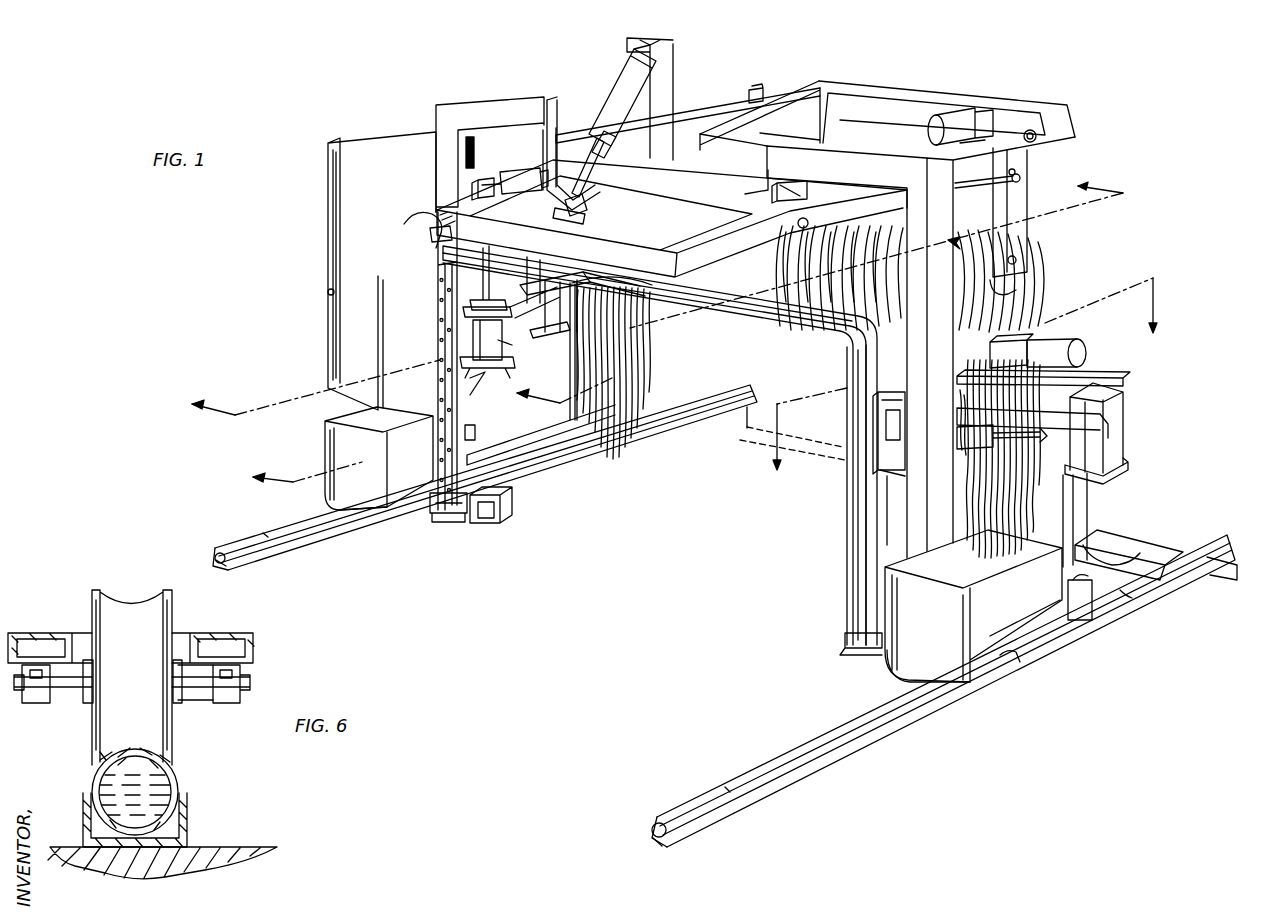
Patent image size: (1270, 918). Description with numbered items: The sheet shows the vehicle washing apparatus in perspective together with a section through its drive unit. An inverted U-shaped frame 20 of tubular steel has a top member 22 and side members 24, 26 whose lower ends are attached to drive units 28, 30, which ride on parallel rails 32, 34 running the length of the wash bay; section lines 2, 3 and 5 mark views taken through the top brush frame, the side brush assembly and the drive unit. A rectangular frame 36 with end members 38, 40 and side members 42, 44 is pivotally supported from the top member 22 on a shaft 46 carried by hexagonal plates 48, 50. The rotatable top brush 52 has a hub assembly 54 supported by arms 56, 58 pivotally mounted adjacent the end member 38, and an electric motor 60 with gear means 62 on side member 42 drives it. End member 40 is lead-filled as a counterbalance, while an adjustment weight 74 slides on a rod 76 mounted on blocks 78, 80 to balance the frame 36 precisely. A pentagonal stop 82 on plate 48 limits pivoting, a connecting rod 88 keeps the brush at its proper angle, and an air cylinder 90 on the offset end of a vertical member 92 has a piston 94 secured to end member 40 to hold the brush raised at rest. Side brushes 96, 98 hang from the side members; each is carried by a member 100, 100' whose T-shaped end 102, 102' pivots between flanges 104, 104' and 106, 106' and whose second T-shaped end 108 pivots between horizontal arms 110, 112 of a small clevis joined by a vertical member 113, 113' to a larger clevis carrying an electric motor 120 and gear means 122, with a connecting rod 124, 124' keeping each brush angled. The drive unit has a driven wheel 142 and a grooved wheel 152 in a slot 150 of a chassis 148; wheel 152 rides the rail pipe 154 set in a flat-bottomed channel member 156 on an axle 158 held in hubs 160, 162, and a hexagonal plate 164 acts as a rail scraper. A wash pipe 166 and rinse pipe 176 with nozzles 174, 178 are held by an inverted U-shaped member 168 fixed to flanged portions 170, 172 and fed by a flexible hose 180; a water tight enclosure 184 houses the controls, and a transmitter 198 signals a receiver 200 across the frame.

In FIG. 1, the section line 2- 2 is at (640, 287).
In FIG. 1, the section line 3- 3 is at (954, 383).
In FIG. 1, the section line 5- 5 is at (432, 423).
In FIG. 1, the inverted U-shaped frame 20 is at (960, 246).
In FIG. 1, the top member 22 is at (493, 107).
In FIG. 1, the side member 24 is at (903, 523).
In FIG. 1, the side member 26 is at (490, 472).
In FIG. 1, the drive unit 28 is at (992, 638).
In FIG. 1, the drive unit 30 is at (338, 408).
In FIG. 1, the rail 32 is at (816, 788).
In FIG. 1, the rail 34 is at (332, 552).
In FIG. 1, the rectangular frame 36 is at (758, 272).
In FIG. 1, the end member 38 is at (1005, 100).
In FIG. 1, the end member 40 is at (438, 213).
In FIG. 1, the side member 42 is at (1078, 128).
In FIG. 1, the side member 44 is at (706, 112).
In FIG. 1, the shaft 46 is at (682, 208).
In FIG. 1, the hexagonal plate 48 is at (745, 194).
In FIG. 1, the hexagonal plate 50 is at (600, 172).
In FIG. 1, the top brush 52 is at (1022, 310).
In FIG. 1, the hub assembly 54 is at (1018, 290).
In FIG. 1, the arm 56 is at (1028, 200).
In FIG. 1, the arm 58 is at (824, 134).
In FIG. 1, the electric motor 60 is at (960, 110).
In FIG. 1, the gear means 62 is at (1035, 130).
In FIG. 1, the adjustment weight 74 is at (542, 178).
In FIG. 1, the rod 76 is at (528, 165).
In FIG. 1, the block 78 is at (478, 190).
In FIG. 1, the block 80 is at (760, 89).
In FIG. 1, the pentagonal stop 82 is at (796, 190).
In FIG. 1, the connecting rod 88 is at (976, 186).
In FIG. 1, the air cylinder 90 is at (615, 86).
In FIG. 1, the member 92 is at (675, 48).
In FIG. 1, the piston 94 is at (586, 208).
In FIG. 1, the side brush 96 is at (1045, 500).
In FIG. 1, the side brush 98 is at (642, 346).
In FIG. 1, the member 100 is at (1060, 440).
In FIG. 1, the member 100' is at (528, 351).
In FIG. 1, the T-shaped end 102 is at (847, 443).
In FIG. 1, the T-shaped end 102' is at (427, 337).
In FIG. 1, the flange 104 is at (849, 433).
In FIG. 1, the flange 104' is at (500, 269).
In FIG. 1, the flange 106 is at (892, 507).
In FIG. 1, the flange 106' is at (437, 387).
In FIG. 1, the second T-shaped end 108 is at (625, 276).
In FIG. 1, the horizontal arm 110 is at (1126, 380).
In FIG. 1, the horizontal arm 112 is at (1110, 468).
In FIG. 1, the vertical member 113 is at (1100, 520).
In FIG. 1, the vertical member 113' is at (639, 351).
In FIG. 1, the electric motor 120 is at (1086, 353).
In FIG. 1, the gear means 122 is at (1053, 334).
In FIG. 1, the connecting rod 124 is at (1111, 428).
In FIG. 1, the connecting rod 124' is at (553, 287).
In FIG. 1, the wheel 142 is at (432, 515).
In FIG. 1, the chassis 148 is at (458, 515).
In FIG. 6, the chassis 148 is at (255, 650).
In FIG. 1, the slot 150 is at (1080, 585).
In FIG. 6, the slot 150 is at (84, 635).
In FIG. 1, the wheel 152 is at (1130, 596).
In FIG. 6, the wheel 152 is at (175, 612).
In FIG. 1, the pipe 154 is at (265, 535).
In FIG. 6, the pipe 154 is at (180, 790).
In FIG. 1, the channel member 156 is at (262, 558).
In FIG. 6, the channel member 156 is at (188, 838).
In FIG. 6, the axle 158 is at (199, 690).
In FIG. 6, the hub 160 is at (244, 698).
In FIG. 6, the hub 162 is at (36, 704).
In FIG. 1, the hexagonal plate 164 is at (326, 506).
In FIG. 1, the wash pipe 166 is at (848, 520).
In FIG. 1, the inverted U-shaped member 168 is at (865, 575).
In FIG. 1, the flanged portion 170 is at (878, 655).
In FIG. 1, the flanged portion 172 is at (505, 510).
In FIG. 1, the nozzle 174 is at (467, 358).
In FIG. 1, the rinse pipe 176 is at (700, 290).
In FIG. 1, the nozzle 178 is at (445, 300).
In FIG. 1, the flexible hose 180 is at (403, 223).
In FIG. 1, the water tight enclosure 184 is at (402, 261).
In FIG. 1, the high frequency transmitter 198 is at (922, 562).
In FIG. 1, the high frequency receiver 200 is at (478, 433).